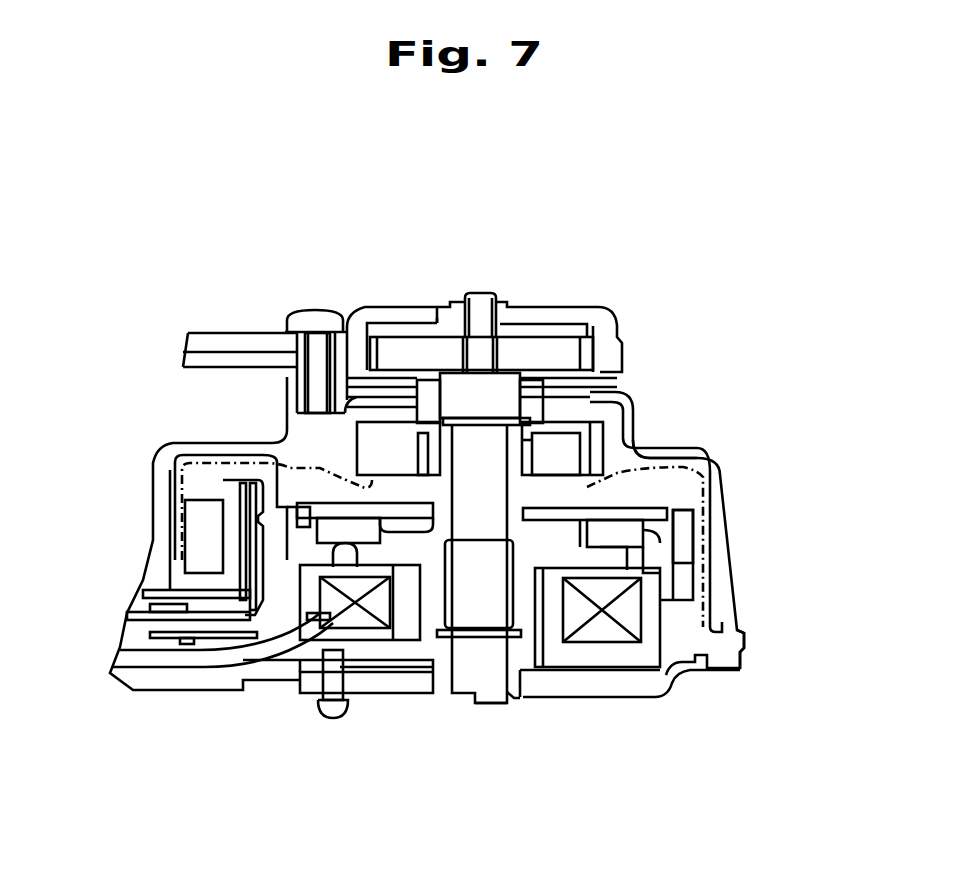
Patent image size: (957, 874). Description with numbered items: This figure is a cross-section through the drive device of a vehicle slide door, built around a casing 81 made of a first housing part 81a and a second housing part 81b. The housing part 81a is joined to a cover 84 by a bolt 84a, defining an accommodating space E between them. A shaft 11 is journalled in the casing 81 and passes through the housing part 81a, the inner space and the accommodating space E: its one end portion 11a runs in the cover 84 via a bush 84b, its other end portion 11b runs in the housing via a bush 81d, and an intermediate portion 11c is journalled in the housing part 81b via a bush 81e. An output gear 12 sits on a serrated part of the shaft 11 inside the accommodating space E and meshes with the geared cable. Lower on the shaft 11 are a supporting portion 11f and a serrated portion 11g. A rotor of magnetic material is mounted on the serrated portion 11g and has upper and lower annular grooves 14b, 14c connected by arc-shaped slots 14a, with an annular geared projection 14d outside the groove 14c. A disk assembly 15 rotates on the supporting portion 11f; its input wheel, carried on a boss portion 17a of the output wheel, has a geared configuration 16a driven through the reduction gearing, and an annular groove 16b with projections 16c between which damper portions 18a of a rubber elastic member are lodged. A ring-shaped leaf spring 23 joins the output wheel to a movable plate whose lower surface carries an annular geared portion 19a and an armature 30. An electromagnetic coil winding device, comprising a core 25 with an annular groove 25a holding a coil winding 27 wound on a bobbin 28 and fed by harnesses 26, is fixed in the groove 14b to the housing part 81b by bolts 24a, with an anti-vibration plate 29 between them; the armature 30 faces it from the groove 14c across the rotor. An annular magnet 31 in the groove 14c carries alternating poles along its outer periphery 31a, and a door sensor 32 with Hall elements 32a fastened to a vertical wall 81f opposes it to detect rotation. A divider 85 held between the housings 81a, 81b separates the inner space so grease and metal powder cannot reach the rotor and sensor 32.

The shaft 11 is at (493, 707).
The end portion of the shaft 11a is at (481, 306).
The end portion of the shaft 11b is at (478, 706).
The portion of the shaft 11c is at (460, 395).
The supporting portion 11f is at (513, 390).
The serrated portion 11g is at (470, 698).
The output gear 12 is at (537, 343).
The arc-shaped slots 14a is at (741, 665).
The annular groove 14b is at (257, 580).
The annular groove 14c is at (320, 640).
The annular geared projection 14d is at (660, 545).
The disk assembly 15 is at (644, 481).
The geared configuration 16a is at (573, 462).
The annular groove 16b is at (500, 440).
The projections 16c is at (300, 325).
The boss portion 17a is at (447, 440).
The damper portions 18a is at (567, 453).
The annular geared portion 19a is at (660, 520).
The leaf spring 23 is at (238, 333).
The bolts 24a is at (323, 717).
The core 25 is at (570, 660).
The annular groove 25a is at (667, 582).
The harnesses 26 is at (260, 660).
The coil winding 27 is at (383, 623).
The bobbin 28 is at (400, 648).
The anti-vibration plate 29 is at (400, 673).
The armature 30 is at (627, 545).
The magnet 31 is at (287, 505).
The outer periphery of the magnet 31a is at (693, 537).
The door sensor 32 is at (215, 480).
The Hall elements 32a is at (255, 547).
The casing 81 is at (723, 461).
The first housing part 81a is at (197, 443).
The second housing part 81b is at (650, 687).
The bush 81d is at (513, 697).
The bush 81e is at (590, 380).
The vertical wall 81f is at (200, 548).
The cover 84 is at (570, 313).
The bolt 84a is at (325, 318).
The bush 84b is at (457, 333).
The divider 85 is at (157, 478).
The accommodating space E is at (437, 323).